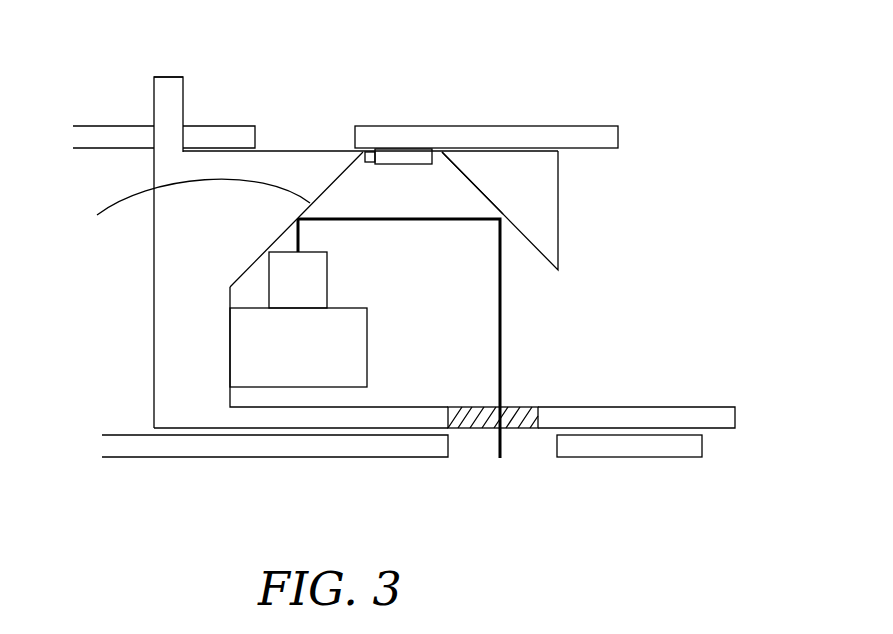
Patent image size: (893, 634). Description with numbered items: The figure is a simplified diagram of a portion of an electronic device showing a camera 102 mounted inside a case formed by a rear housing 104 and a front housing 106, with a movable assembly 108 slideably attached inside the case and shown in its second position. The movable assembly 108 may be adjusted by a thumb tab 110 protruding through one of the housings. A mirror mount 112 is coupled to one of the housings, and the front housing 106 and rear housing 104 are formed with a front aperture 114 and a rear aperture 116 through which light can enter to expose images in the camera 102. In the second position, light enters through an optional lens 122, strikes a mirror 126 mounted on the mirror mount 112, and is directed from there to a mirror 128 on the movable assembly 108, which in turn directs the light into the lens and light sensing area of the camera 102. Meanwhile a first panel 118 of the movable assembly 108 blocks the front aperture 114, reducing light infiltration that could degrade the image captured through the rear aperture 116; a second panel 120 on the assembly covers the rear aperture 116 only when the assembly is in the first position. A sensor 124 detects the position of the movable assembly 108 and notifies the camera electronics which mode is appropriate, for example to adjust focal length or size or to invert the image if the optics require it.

The camera 102 is at (307, 400).
The rear housing 104 is at (140, 458).
The front housing 106 is at (597, 123).
The movable assembly 108 is at (178, 248).
The thumb tab 110 is at (182, 76).
The mirror mount 112 is at (535, 167).
The front aperture 114 is at (310, 148).
The rear aperture 116 is at (530, 445).
The first panel 118 is at (277, 140).
The second panel 120 is at (660, 402).
The lens 122 is at (477, 430).
The sensor 124 is at (402, 148).
The mirror 126 is at (477, 183).
The mirror 128 is at (184, 212).